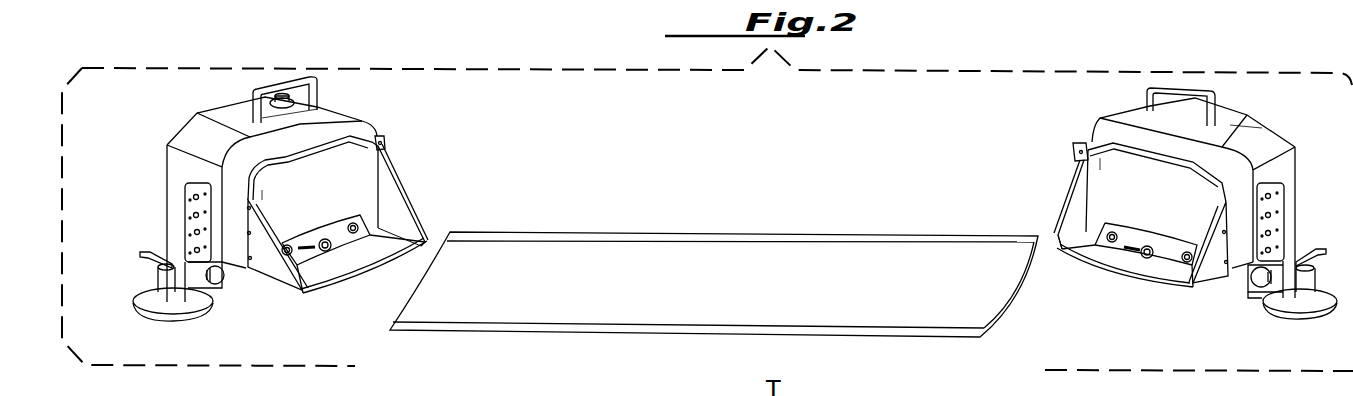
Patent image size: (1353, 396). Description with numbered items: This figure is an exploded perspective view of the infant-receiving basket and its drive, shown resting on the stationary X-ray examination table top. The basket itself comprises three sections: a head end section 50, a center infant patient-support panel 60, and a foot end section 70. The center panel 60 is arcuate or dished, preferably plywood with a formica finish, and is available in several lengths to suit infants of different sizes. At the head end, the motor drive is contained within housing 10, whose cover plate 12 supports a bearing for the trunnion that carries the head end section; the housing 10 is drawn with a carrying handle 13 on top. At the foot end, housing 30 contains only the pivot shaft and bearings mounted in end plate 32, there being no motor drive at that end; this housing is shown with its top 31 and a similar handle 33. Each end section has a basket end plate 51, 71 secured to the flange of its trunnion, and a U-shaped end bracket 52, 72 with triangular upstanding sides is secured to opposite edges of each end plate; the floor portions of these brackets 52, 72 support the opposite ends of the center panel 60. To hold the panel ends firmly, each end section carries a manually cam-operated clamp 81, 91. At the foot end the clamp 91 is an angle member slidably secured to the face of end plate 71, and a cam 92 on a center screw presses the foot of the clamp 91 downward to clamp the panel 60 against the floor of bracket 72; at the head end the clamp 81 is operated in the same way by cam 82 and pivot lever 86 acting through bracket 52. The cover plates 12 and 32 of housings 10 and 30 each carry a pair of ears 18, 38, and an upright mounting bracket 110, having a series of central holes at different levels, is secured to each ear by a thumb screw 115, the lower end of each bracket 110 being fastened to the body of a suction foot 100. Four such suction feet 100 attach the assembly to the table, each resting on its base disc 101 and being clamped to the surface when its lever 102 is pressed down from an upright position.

The housing 10 is at (176, 129).
The cover plate 12 is at (342, 126).
The handle 13 is at (256, 96).
The ears 18 is at (200, 288).
The foot-end housing 30 is at (1112, 116).
The housing 31 is at (1256, 133).
The end plate 32 is at (1100, 134).
The handle 33 is at (1208, 97).
The ears 38 is at (1258, 296).
The head end section 50 is at (389, 155).
The basket end plate 51 is at (360, 183).
The U-shaped end bracket 52 is at (400, 220).
The center infant patient-support panel 60 is at (694, 237).
The foot end section 70 is at (1065, 199).
The basket end plate 71 is at (1100, 164).
The U-shaped end bracket 72 is at (1068, 224).
The clamp 81 is at (350, 246).
The cam 82 is at (326, 236).
The pivot lever 86 is at (307, 243).
The clamp 91 is at (1119, 236).
The cam 92 is at (1140, 252).
The suction feet 100 is at (1283, 316).
The base disc 101 is at (150, 302).
The levers 102 is at (142, 257).
The mounting bracket 110 is at (1074, 148).
The thumb screw 115 is at (223, 278).